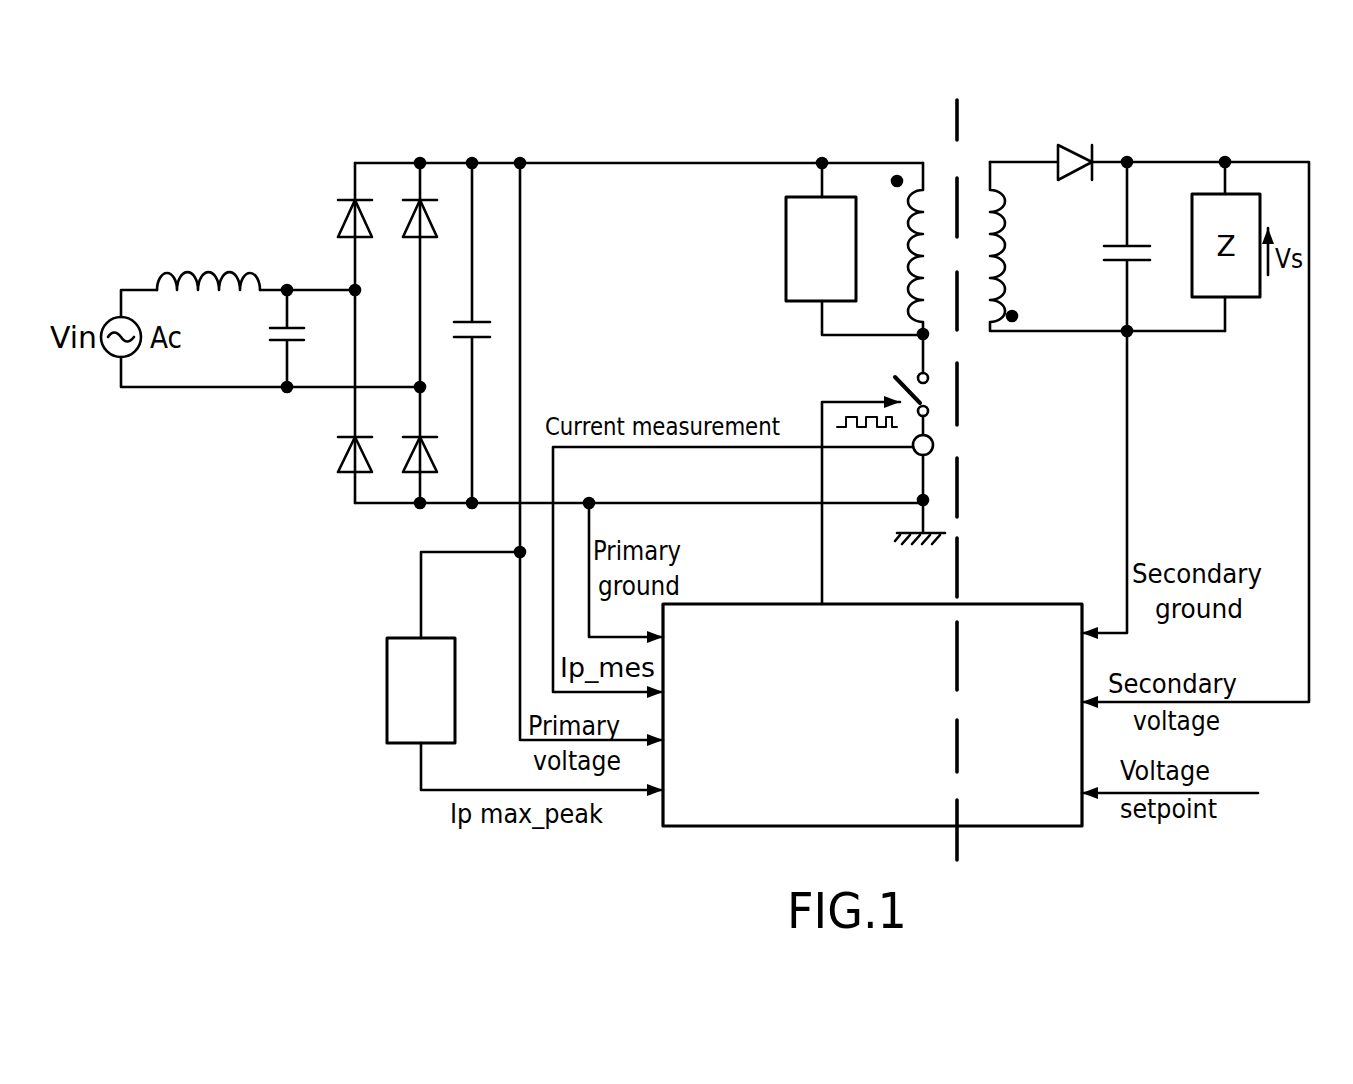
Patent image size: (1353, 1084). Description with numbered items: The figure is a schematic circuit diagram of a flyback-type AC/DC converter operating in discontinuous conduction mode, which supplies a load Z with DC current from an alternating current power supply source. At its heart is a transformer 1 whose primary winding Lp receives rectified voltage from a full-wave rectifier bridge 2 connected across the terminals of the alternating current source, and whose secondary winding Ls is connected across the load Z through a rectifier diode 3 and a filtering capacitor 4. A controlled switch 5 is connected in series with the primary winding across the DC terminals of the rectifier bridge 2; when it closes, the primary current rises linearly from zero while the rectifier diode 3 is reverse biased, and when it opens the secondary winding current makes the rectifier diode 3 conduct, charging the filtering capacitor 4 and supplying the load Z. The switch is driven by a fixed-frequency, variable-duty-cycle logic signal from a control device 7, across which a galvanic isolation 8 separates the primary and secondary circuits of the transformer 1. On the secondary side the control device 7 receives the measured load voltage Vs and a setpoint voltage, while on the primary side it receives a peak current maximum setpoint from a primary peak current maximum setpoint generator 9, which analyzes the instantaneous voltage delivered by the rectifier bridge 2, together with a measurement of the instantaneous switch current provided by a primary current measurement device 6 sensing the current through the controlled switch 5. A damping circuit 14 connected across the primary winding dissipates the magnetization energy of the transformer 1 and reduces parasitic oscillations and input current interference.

The transformer 1 is at (966, 170).
The full-wave rectifier bridge 2 is at (365, 240).
The rectifier diode 3 is at (1070, 160).
The filtering capacitor 4 is at (1138, 244).
The controlled switch 5 is at (893, 380).
The primary current measurement device 6 is at (912, 452).
The control device 7 is at (1005, 603).
The galvanic isolation 8 is at (960, 405).
The primary peak current maximum setpoint generator 9 is at (387, 690).
The damping circuit 14 is at (786, 258).